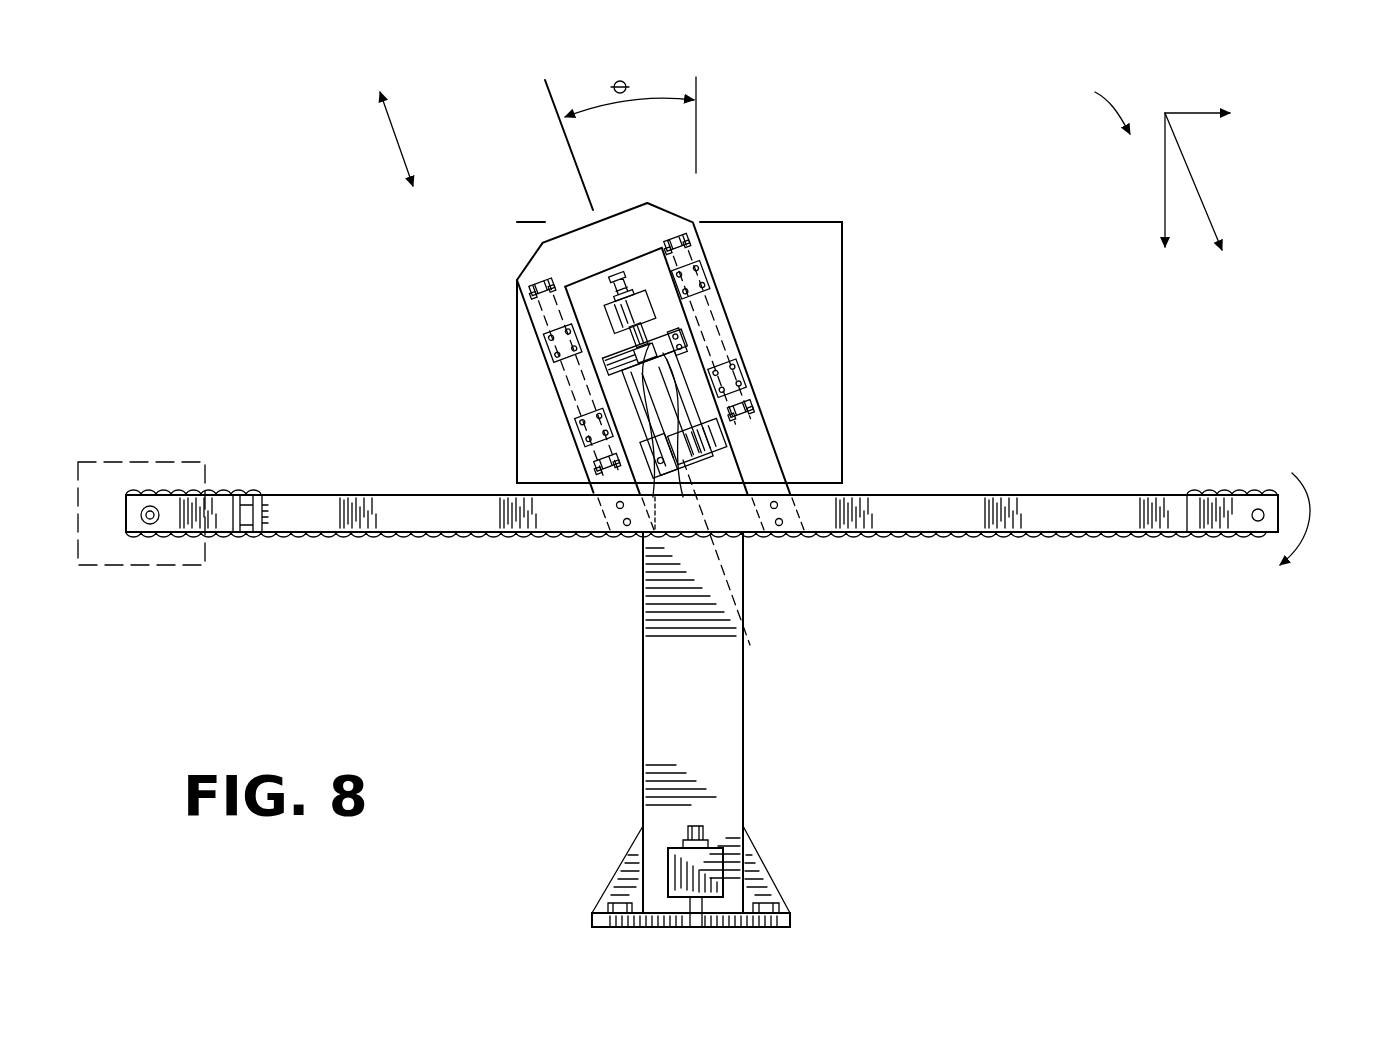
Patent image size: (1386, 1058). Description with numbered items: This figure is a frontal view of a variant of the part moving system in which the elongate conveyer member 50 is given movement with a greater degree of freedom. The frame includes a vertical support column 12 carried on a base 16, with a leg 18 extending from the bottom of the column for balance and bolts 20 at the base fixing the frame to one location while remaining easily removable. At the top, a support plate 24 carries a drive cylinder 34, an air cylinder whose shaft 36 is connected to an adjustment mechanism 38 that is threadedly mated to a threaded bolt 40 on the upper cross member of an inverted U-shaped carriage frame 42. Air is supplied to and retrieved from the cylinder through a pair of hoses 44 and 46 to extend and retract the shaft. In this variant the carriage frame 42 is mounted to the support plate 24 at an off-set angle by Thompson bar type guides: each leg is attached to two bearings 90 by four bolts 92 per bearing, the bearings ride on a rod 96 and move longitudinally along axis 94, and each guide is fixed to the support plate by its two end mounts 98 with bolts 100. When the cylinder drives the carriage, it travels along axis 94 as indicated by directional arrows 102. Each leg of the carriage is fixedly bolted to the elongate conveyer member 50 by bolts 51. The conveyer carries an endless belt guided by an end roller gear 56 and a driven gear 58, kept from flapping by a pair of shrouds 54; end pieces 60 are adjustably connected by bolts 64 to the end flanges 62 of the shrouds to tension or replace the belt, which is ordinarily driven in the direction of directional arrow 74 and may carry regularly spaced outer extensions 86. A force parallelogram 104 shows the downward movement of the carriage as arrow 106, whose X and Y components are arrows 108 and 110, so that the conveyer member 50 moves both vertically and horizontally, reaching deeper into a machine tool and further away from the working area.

The vertical support column 12 is at (746, 749).
The base 16 is at (792, 922).
The leg 18 is at (724, 866).
The bolts 20 is at (620, 906).
The support plate 24 is at (811, 221).
The drive cylinder 34 is at (736, 455).
The shaft 36 is at (545, 256).
The adjustment mechanism 38 is at (653, 312).
The threaded bolt 40 is at (598, 288).
The U-shaped carriage frame 42 is at (604, 236).
The hose 44 is at (661, 530).
The hose 46 is at (639, 535).
The elongate conveyer member 50 is at (1018, 445).
The bolts 51 is at (613, 512).
The shrouds 54 is at (1103, 518).
The end roller gear 56 is at (1258, 521).
The driven gear 58 is at (150, 528).
The end pieces 60 is at (222, 524).
The end flanges 62 is at (258, 533).
The bolts 64 is at (266, 505).
The directional arrow 74 is at (1314, 494).
The extensions 86 is at (925, 535).
The bearings 90 is at (564, 338).
The bolts 92 is at (701, 291).
The axis 94 is at (552, 100).
The rod 96 is at (566, 367).
The end mounts 98 is at (532, 285).
The bolts 100 is at (529, 292).
The directional arrows 102 is at (392, 130).
The force parallelogram 104 is at (1083, 105).
The arrow 106 is at (1208, 206).
The X component arrow 108 is at (1191, 110).
The Y component arrow 110 is at (1160, 178).